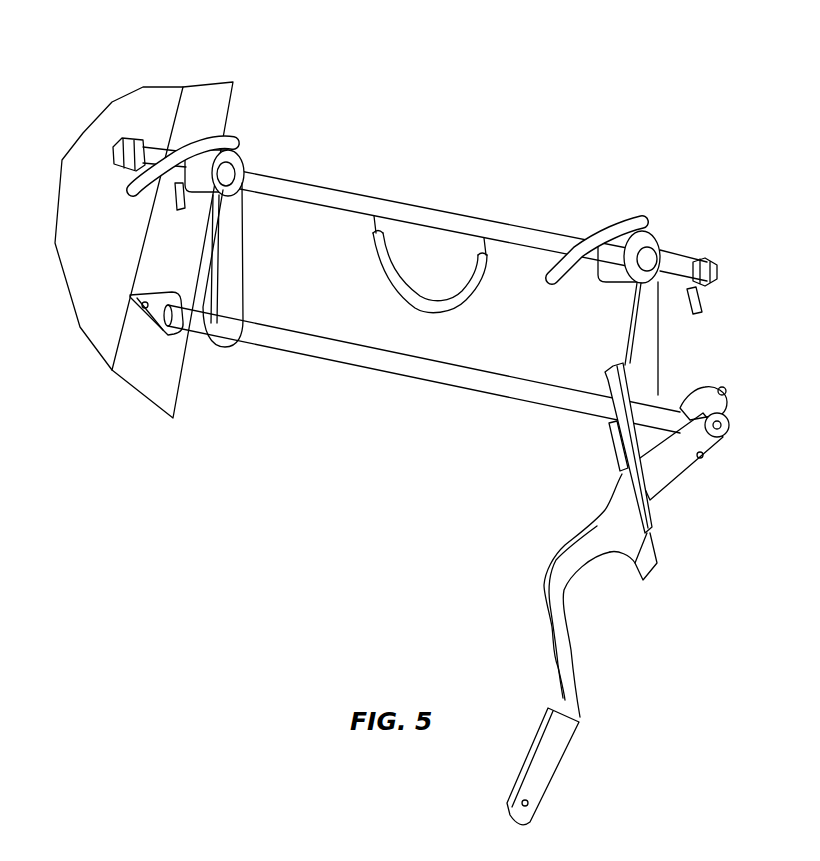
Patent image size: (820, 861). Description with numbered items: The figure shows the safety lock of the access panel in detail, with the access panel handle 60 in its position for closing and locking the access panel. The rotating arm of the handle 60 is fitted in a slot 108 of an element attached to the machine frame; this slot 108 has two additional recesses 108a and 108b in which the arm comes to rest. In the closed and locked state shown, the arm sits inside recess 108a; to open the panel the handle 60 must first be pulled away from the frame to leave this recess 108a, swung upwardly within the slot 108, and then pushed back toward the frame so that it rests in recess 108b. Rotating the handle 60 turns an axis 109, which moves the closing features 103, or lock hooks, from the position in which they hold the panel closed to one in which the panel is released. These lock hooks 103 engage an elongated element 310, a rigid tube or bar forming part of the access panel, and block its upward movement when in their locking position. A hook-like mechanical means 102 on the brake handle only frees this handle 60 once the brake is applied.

The access panel handle 60 is at (552, 763).
The mechanical means 102 is at (612, 448).
The closing features 103 is at (232, 141).
The slot 108 is at (615, 565).
The recess 108a is at (625, 499).
The recess 108b is at (606, 406).
The axis 109 is at (348, 352).
The elongated element 310 is at (426, 214).